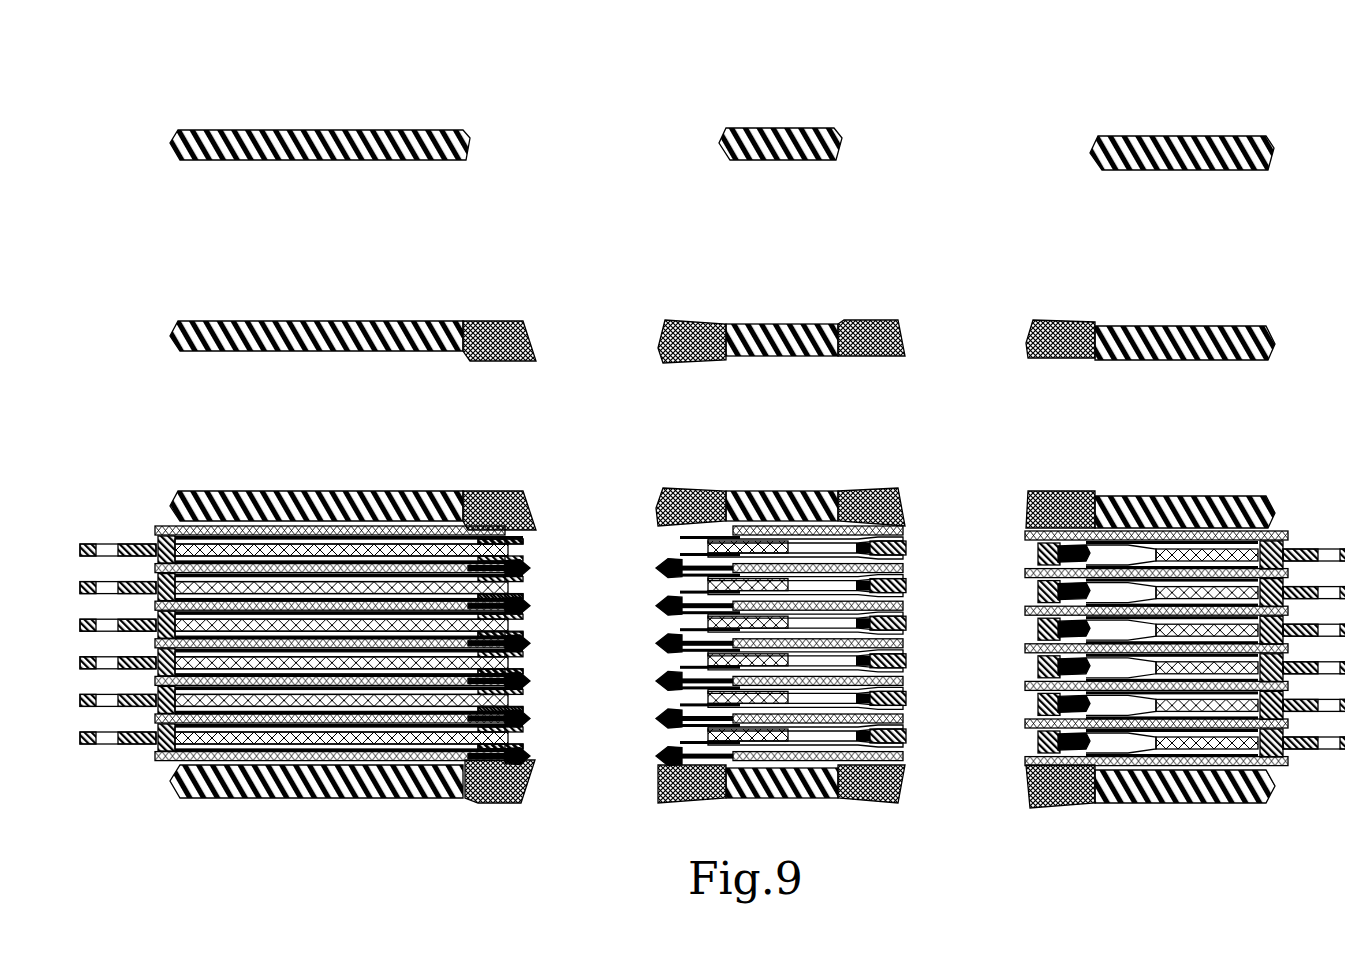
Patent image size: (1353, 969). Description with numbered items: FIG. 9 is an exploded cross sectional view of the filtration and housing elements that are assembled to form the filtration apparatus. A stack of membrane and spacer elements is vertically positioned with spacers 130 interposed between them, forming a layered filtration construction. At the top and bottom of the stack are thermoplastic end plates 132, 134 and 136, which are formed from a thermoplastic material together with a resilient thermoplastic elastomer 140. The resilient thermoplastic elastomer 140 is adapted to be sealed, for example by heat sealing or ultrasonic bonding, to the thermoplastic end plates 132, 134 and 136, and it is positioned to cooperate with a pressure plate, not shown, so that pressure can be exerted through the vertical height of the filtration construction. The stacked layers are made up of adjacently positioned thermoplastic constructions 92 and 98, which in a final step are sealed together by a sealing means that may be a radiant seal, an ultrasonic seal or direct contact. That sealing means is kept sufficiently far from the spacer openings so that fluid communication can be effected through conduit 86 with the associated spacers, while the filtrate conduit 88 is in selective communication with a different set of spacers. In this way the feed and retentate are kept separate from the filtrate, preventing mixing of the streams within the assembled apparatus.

The conduit 86 is at (583, 490).
The filtrate conduit 88 is at (946, 502).
The thermoplastic construction 92 is at (517, 558).
The thermoplastic construction 98 is at (655, 558).
The spacer 130 is at (505, 540).
The thermoplastic end plate 132 is at (348, 130).
The thermoplastic end plate 134 is at (762, 130).
The thermoplastic end plate 136 is at (1173, 145).
The resilient thermoplastic elastomer 140 is at (492, 315).